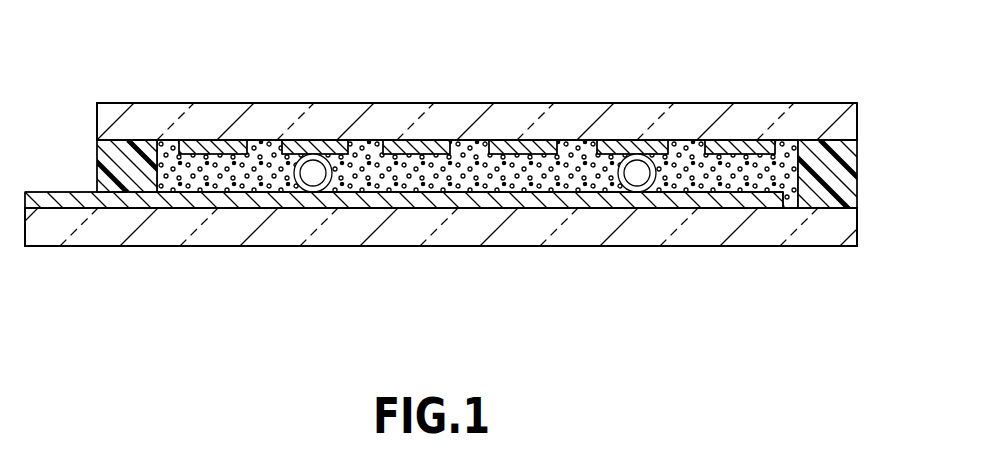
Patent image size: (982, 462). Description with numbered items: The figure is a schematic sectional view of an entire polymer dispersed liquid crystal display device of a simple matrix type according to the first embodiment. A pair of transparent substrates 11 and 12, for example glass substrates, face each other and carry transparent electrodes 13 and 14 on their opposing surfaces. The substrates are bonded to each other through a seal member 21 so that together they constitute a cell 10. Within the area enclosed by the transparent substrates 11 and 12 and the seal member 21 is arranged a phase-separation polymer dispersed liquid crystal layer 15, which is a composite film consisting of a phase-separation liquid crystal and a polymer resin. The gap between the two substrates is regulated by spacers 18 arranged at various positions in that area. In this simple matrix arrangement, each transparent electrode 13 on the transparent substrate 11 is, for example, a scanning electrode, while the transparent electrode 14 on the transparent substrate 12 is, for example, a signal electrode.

The cell 10 is at (793, 96).
The transparent substrate 11 is at (200, 117).
The transparent substrate 12 is at (208, 227).
The transparent electrode 13 is at (313, 147).
The transparent electrode 14 is at (457, 200).
The phase-separation polymer dispersed liquid crystal layer 15 is at (590, 190).
The spacers 18 is at (346, 192).
The seal member 21 is at (107, 152).